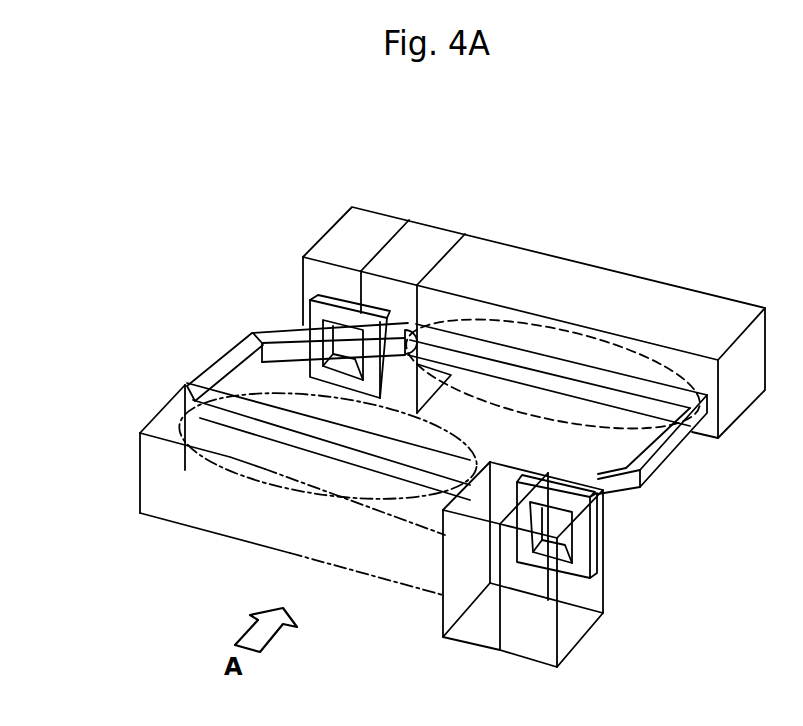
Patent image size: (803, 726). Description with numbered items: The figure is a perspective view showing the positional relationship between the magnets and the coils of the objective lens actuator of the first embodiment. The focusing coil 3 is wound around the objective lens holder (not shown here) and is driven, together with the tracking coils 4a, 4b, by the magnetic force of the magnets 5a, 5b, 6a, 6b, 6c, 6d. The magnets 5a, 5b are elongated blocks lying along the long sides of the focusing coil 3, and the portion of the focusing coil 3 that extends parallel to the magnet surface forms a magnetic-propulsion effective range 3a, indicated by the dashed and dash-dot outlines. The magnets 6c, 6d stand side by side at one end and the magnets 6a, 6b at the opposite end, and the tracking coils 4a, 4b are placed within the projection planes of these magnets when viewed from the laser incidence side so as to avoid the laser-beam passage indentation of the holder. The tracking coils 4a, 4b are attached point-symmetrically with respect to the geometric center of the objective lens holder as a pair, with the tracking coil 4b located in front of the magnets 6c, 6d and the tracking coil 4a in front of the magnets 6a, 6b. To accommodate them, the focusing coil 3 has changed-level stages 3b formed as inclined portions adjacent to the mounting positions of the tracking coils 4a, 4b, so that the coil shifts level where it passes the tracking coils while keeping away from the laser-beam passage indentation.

The focusing coil 3 is at (669, 447).
The magnetic-propulsion effective range 3a is at (540, 300).
The changed-level stage 3b is at (264, 348).
The tracking coil 4a is at (577, 545).
The tracking coil 4b is at (318, 312).
The magnet 5a is at (185, 527).
The magnet 5b is at (648, 297).
The magnet 6a is at (587, 640).
The magnet 6b is at (467, 643).
The magnet 6c is at (352, 243).
The magnet 6d is at (425, 243).